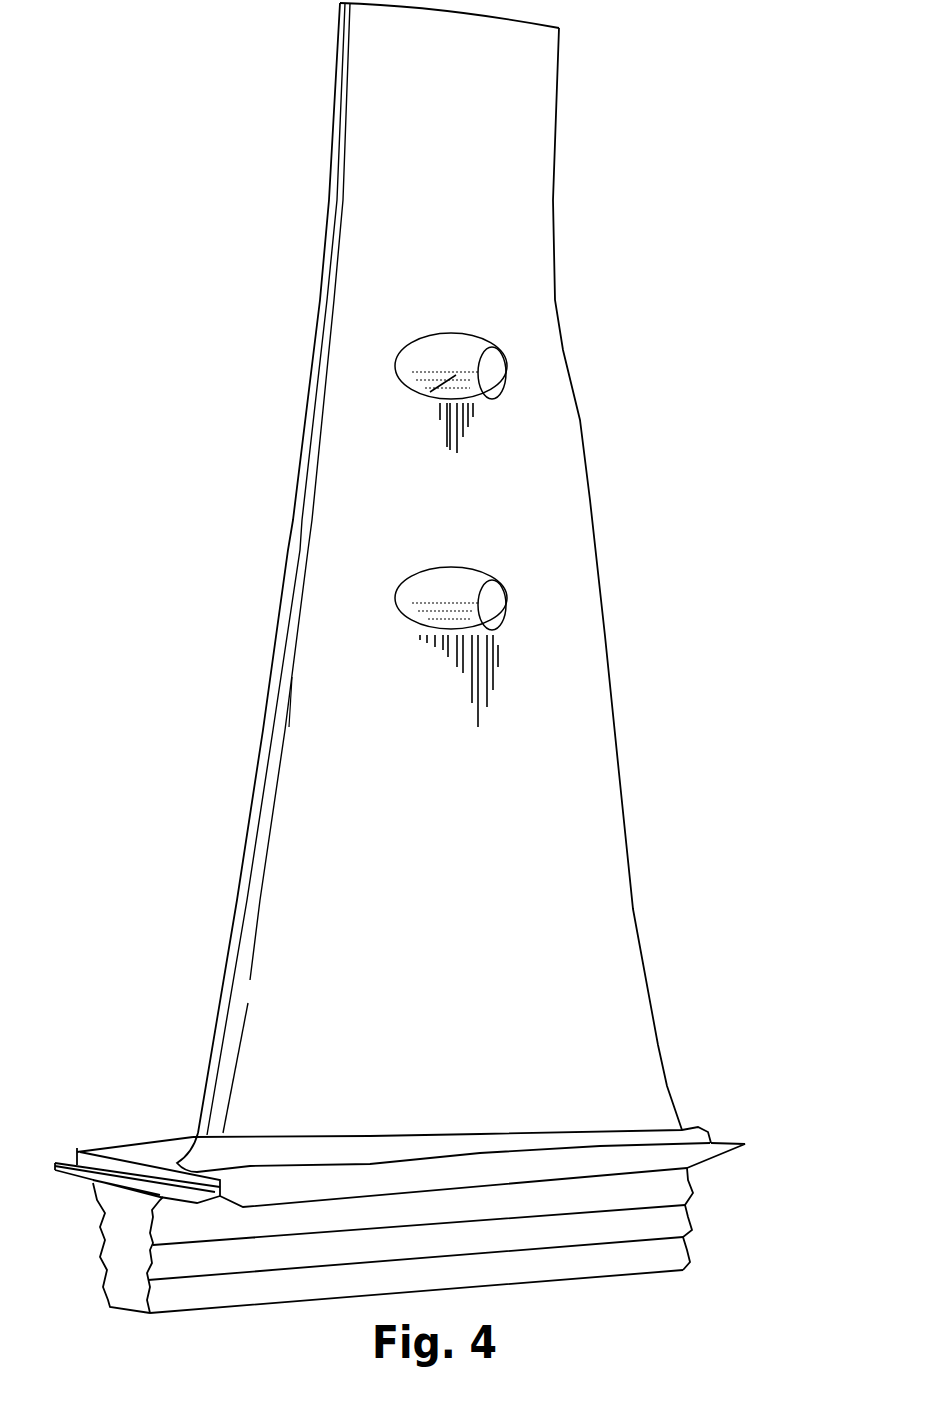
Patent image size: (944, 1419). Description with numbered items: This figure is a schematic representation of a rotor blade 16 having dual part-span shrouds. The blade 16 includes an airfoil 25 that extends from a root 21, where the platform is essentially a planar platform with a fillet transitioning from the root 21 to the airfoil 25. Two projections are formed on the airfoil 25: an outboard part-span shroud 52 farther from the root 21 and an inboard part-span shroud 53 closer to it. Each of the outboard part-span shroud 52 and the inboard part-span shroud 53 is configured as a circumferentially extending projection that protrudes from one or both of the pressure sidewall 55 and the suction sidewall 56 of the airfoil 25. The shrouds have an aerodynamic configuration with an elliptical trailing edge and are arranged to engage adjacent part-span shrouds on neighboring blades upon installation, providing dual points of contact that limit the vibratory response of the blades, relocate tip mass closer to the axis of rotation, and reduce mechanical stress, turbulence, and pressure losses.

The blade 16 is at (396, 587).
The root 21 is at (137, 1100).
The airfoil 25 is at (224, 647).
The outboard part-span shroud 52 is at (432, 370).
The inboard part-span shroud 53 is at (443, 597).
The pressure sidewall 55 is at (545, 367).
The suction sidewall 56 is at (220, 1003).